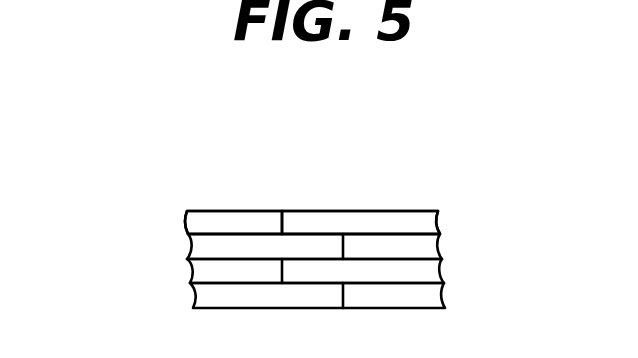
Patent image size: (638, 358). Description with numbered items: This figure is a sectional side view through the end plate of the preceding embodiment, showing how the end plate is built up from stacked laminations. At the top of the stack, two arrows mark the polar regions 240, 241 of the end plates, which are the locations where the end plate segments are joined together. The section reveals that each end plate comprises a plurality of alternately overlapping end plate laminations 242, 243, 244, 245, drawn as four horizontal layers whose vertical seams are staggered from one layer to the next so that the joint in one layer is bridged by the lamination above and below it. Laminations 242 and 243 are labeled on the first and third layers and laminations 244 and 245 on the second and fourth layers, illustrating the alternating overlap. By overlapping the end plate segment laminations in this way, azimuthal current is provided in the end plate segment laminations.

The polar region 240 is at (245, 195).
The polar region 241 is at (356, 195).
The end plate lamination 242 is at (183, 223).
The end plate lamination 243 is at (437, 223).
The end plate lamination 244 is at (183, 250).
The end plate lamination 245 is at (437, 250).